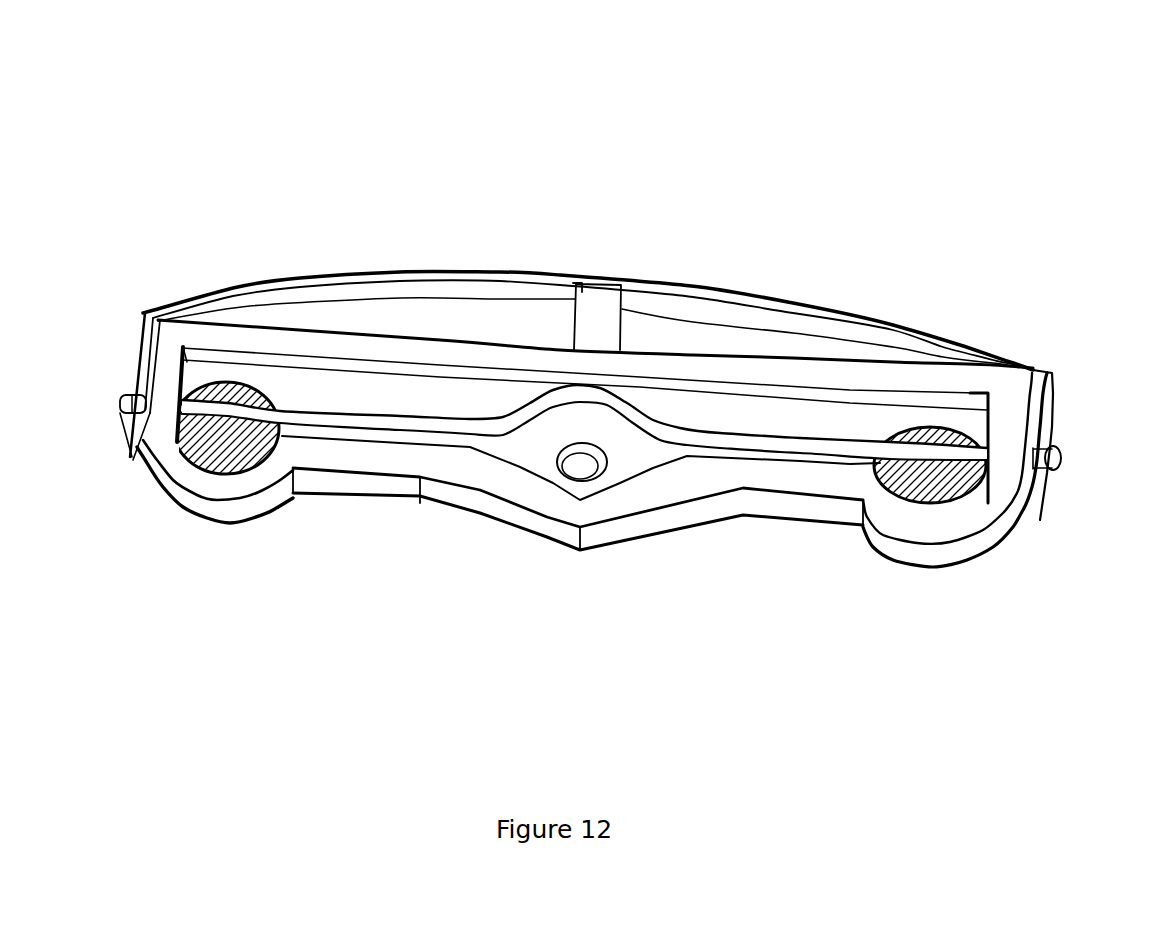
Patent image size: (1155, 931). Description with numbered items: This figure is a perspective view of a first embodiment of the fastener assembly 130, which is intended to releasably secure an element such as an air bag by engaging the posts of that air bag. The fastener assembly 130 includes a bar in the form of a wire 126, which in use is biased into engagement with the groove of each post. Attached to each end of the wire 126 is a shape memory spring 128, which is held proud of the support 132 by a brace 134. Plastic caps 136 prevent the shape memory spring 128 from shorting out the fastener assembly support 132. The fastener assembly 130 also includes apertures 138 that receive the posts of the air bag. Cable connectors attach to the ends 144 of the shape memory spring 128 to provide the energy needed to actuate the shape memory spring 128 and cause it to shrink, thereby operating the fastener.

The wire 126 is at (741, 442).
The shape memory spring 128 is at (683, 283).
The fastener assembly 130 is at (525, 166).
The support 132 is at (265, 490).
The brace 134 is at (593, 297).
The plastic cap 136 is at (114, 418).
The aperture 138 is at (241, 374).
The end of shape memory spring 144 is at (1038, 522).